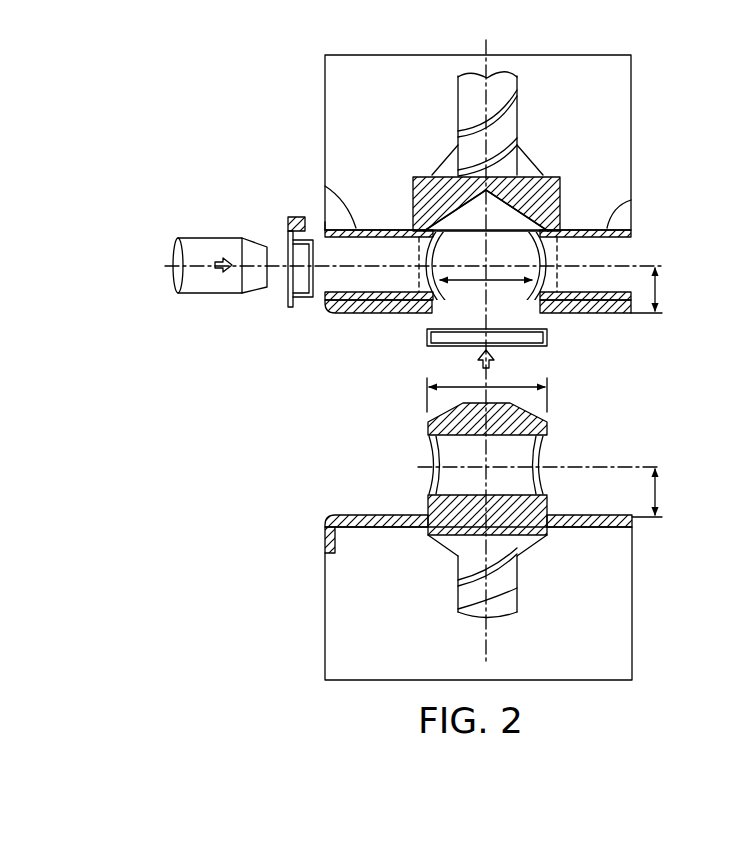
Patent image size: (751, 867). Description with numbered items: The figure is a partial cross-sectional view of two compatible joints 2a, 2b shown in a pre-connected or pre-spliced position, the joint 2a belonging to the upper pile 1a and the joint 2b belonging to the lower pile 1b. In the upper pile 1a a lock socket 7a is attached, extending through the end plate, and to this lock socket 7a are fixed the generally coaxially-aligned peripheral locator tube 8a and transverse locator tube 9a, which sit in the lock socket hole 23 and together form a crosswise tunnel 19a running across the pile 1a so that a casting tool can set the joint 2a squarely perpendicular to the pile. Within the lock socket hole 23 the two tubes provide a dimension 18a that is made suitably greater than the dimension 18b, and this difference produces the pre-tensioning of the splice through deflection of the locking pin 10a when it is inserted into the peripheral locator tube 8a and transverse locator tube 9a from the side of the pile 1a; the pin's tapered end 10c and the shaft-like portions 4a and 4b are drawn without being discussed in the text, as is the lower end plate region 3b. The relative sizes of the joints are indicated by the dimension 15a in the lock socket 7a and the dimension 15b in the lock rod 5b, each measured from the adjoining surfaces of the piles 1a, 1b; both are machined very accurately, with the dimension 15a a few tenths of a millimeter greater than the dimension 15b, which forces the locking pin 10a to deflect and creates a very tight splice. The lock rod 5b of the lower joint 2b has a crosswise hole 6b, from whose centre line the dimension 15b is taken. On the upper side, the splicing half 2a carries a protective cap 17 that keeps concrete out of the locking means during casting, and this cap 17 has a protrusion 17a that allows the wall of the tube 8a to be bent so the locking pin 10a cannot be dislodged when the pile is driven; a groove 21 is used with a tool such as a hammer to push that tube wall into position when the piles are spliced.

The upper pile 1a is at (631, 92).
The upper screw shaft 4a is at (517, 107).
The lock socket 7a is at (562, 193).
The lock socket hole 23 is at (418, 216).
The crosswise tunnel 19a is at (614, 254).
The joint 2a is at (361, 327).
The dimension 18a is at (525, 283).
The dimension 18b is at (513, 387).
The dimension 15a is at (671, 290).
The peripheral locator tube 8a is at (325, 186).
The transverse locator tube 9a is at (631, 200).
The groove 21 is at (326, 226).
The protrusion 17a is at (288, 218).
The protective cap 17 is at (303, 302).
The locking pin 10a is at (190, 295).
The rod nose 10c is at (255, 295).
The lock rod 5b is at (548, 508).
The crosswise hole 6b is at (523, 461).
The dimension 15b is at (670, 493).
The joint 2b is at (364, 499).
The lower plate lip 3b is at (343, 515).
The lower pile 1b is at (632, 631).
The lower screw shaft 4b is at (517, 603).